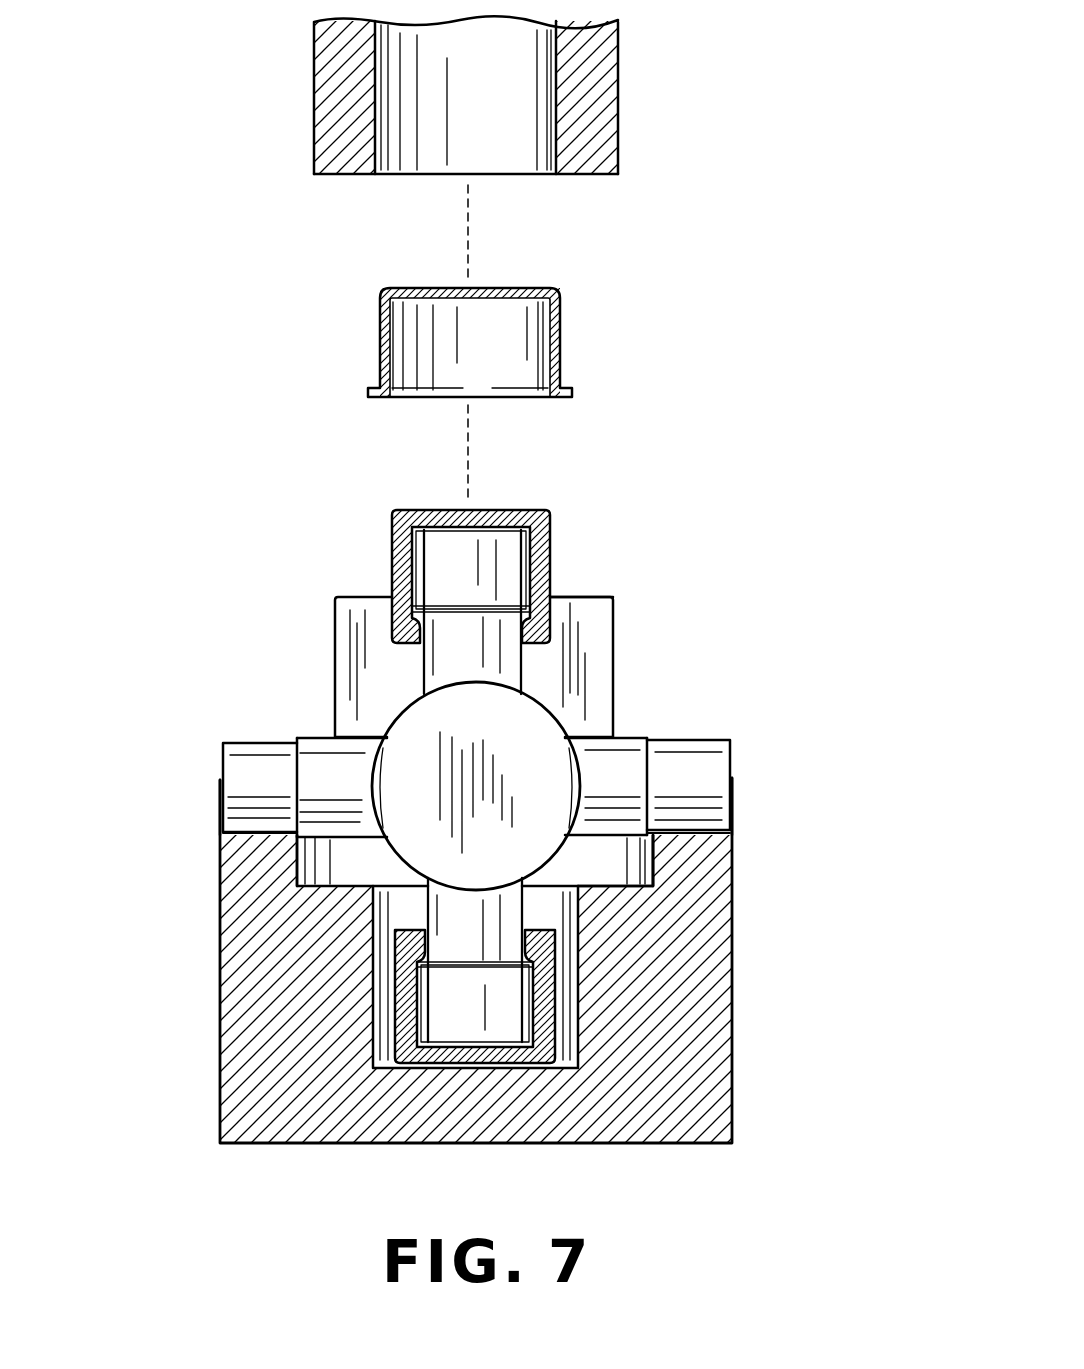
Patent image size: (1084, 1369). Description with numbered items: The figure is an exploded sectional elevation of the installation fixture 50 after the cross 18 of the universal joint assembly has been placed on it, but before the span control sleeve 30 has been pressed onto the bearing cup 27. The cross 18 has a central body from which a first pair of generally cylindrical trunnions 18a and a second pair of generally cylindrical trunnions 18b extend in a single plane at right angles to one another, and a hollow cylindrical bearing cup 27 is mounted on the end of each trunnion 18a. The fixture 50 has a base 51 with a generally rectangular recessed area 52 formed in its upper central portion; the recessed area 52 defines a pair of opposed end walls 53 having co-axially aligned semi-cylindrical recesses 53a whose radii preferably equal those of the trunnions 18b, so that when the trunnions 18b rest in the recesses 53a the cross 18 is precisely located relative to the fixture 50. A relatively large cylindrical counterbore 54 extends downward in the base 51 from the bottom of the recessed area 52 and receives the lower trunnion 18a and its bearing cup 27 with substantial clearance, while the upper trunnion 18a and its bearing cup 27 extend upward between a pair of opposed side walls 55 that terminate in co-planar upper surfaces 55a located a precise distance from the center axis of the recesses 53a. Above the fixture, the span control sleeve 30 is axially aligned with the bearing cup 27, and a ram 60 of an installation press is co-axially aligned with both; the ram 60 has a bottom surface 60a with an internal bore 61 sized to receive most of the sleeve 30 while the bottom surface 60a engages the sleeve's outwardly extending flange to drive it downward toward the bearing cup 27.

The cross 18 is at (615, 760).
The first pair of trunnions 18a is at (437, 565).
The second pair of trunnions 18b is at (258, 753).
The bearing cup 27 is at (582, 495).
The span control sleeve 30 is at (330, 322).
The installation fixture 50 is at (479, 819).
The base 51 is at (705, 1100).
The recessed area 52 is at (603, 886).
The end walls 53 is at (233, 865).
The semi-cylindrical recesses 53a is at (253, 832).
The counterbore 54 is at (378, 978).
The side walls 55 is at (595, 628).
The upper surfaces 55a is at (578, 595).
The ram 60 is at (472, 105).
The bottom surface 60a is at (588, 175).
The internal bore 61 is at (374, 60).